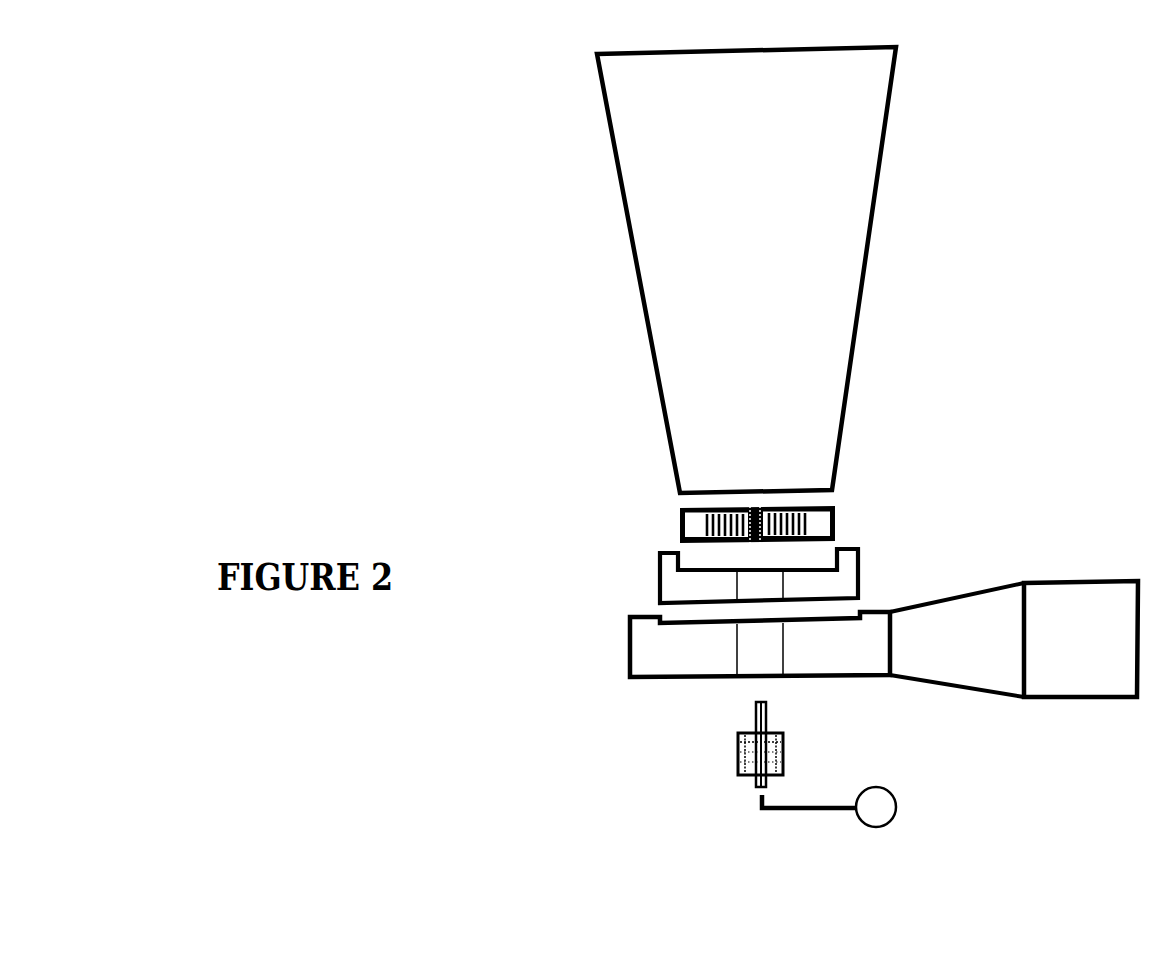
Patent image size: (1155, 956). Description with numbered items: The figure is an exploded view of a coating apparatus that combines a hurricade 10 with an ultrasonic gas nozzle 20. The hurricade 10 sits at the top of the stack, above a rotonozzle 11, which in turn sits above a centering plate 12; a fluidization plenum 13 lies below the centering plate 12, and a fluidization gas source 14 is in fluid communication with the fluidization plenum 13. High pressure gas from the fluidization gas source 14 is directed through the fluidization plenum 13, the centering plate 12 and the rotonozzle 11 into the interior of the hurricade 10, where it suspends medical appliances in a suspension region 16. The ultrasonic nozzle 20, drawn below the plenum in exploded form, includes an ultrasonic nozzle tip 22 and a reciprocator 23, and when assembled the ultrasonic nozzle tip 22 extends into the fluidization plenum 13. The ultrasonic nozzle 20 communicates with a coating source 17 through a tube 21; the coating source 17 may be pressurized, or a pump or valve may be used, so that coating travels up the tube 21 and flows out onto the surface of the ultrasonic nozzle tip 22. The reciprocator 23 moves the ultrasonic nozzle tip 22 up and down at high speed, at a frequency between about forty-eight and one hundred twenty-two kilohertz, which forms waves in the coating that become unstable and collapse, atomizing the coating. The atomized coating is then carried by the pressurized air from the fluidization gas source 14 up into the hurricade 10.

The hurricade 10 is at (747, 270).
The suspension region 16 is at (758, 317).
The rotonozzle 11 is at (839, 522).
The centering plate 12 is at (861, 573).
The fluidization plenum 13 is at (866, 679).
The fluidization gas source 14 is at (1088, 653).
The ultrasonic gas nozzle 20 is at (728, 754).
The tube 21 is at (771, 787).
The ultrasonic nozzle tip 22 is at (767, 700).
The reciprocator 23 is at (786, 745).
The coating source 17 is at (887, 820).